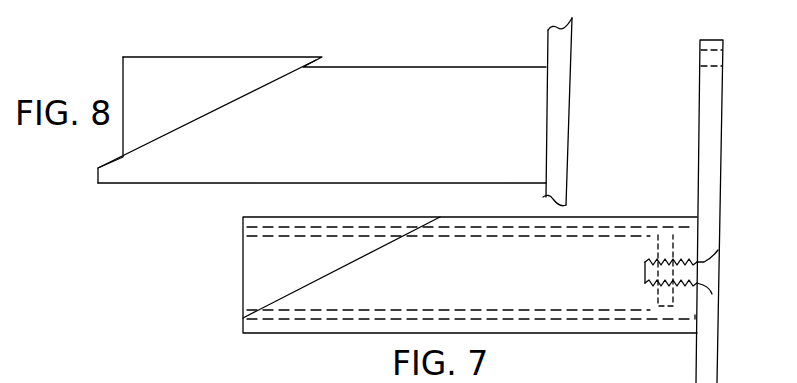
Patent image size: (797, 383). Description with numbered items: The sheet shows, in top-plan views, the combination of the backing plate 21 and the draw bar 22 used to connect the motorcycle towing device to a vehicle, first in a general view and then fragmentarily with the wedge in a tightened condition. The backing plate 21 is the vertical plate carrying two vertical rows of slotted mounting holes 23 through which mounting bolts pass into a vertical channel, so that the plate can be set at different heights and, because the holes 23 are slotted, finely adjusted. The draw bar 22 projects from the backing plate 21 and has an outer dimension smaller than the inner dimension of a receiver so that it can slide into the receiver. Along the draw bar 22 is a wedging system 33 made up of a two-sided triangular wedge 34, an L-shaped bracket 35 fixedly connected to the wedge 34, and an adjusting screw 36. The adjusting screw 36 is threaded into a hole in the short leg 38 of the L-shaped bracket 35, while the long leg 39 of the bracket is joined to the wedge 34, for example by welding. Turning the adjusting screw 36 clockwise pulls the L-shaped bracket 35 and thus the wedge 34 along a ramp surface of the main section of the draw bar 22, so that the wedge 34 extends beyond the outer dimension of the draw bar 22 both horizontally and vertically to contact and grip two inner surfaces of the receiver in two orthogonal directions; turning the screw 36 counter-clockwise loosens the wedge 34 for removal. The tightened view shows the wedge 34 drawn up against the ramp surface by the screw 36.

In FIG. 8, the backing plate 21 is at (560, 96).
In FIG. 7, the backing plate 21 is at (16, 276).
In FIG. 8, the draw bar 22 is at (367, 82).
In FIG. 7, the draw bar 22 is at (317, 327).
In FIG. 8, the slotted mounting holes 23 is at (0, 42).
In FIG. 7, the wedging system 33 is at (220, 322).
In FIG. 8, the two-sided triangular wedge 34 is at (178, 73).
In FIG. 7, the two-sided triangular wedge 34 is at (253, 268).
In FIG. 7, the L-shaped bracket 35 is at (650, 297).
In FIG. 7, the adjusting screw 36 is at (713, 275).
In FIG. 7, the short leg 38 is at (667, 245).
In FIG. 7, the long leg 39 is at (578, 296).